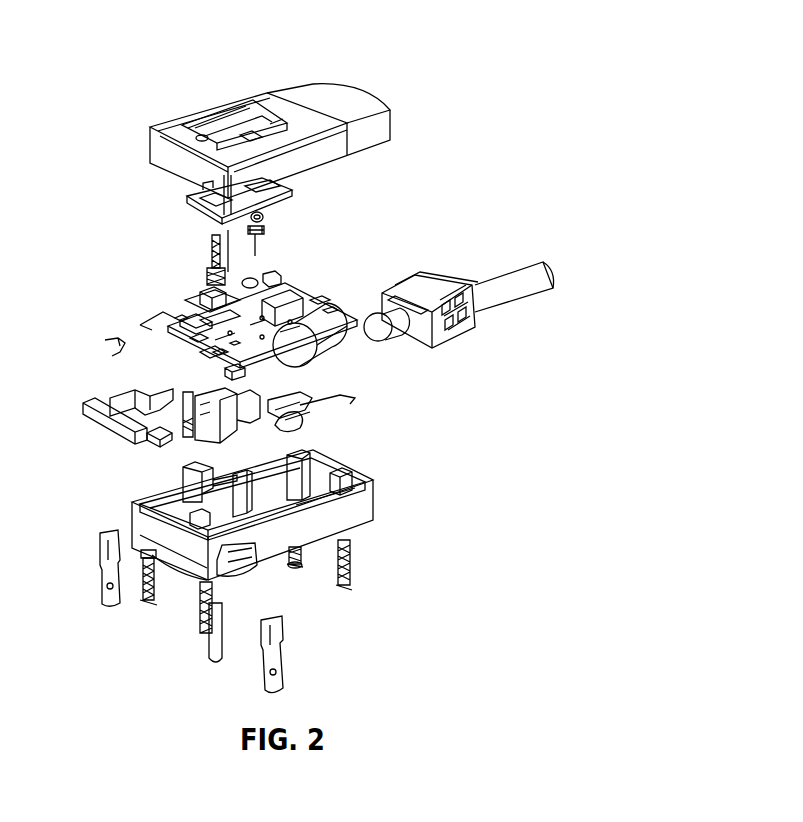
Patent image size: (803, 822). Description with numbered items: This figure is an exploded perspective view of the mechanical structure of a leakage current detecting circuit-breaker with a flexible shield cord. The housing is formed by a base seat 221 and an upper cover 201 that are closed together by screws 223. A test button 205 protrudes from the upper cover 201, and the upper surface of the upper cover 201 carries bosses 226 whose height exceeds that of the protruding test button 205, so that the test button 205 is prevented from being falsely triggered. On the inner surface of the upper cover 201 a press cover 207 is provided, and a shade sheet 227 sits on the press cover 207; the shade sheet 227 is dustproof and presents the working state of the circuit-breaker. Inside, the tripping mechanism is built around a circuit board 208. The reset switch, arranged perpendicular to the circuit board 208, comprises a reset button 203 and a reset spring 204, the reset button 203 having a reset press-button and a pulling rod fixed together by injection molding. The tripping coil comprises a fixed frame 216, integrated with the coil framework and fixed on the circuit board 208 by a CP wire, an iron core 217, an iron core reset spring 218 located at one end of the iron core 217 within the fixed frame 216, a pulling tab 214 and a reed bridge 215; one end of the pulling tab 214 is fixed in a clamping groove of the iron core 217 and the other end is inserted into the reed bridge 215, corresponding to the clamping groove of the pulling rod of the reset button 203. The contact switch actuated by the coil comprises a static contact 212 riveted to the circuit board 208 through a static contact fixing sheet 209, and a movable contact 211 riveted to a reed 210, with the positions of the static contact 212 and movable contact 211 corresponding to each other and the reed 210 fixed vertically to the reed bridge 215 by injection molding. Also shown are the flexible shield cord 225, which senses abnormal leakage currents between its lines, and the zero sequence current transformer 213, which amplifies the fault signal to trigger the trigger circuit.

The upper cover 201 is at (165, 150).
The reset button 203 is at (202, 220).
The reset spring 204 is at (200, 279).
The test button 205 is at (268, 206).
The press cover 207 is at (252, 273).
The circuit board 208 is at (305, 290).
The static contact fixing sheet 209 is at (183, 318).
The reed 210 is at (147, 323).
The movable contact 211 is at (105, 341).
The static contact 212 is at (230, 375).
The zero sequence current transformer 213 is at (322, 360).
The pulling tab 214 is at (138, 401).
The reed bridge 215 is at (103, 421).
The fixed frame 216 is at (270, 401).
The iron core 217 is at (152, 437).
The iron core reset spring 218 is at (189, 434).
The base seat 221 is at (160, 546).
The screws 223 is at (150, 608).
The flexible shield cord 225 is at (378, 310).
The bosses 226 is at (233, 105).
The shade sheet 227 is at (200, 299).